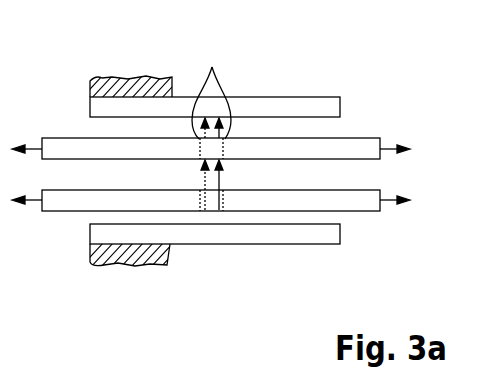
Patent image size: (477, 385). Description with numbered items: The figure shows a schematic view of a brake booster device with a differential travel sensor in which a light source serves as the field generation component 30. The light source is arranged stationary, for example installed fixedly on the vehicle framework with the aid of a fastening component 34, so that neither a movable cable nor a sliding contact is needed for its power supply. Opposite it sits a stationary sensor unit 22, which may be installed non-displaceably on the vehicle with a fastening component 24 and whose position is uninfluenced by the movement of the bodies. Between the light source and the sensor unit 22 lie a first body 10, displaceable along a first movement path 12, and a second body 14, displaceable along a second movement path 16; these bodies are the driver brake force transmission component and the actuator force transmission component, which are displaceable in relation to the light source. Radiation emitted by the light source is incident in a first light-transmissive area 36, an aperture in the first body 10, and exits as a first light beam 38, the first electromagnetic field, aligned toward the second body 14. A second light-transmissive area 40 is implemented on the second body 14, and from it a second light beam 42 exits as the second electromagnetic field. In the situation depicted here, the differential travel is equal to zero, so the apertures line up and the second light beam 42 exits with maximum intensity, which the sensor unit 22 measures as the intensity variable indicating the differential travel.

The first body 10 is at (367, 208).
The first movement path 12 is at (35, 204).
The second body 14 is at (365, 145).
The second movement path 16 is at (42, 138).
The sensor unit 22 is at (317, 105).
The fastening component 24 is at (137, 87).
The field generation component 30 is at (313, 239).
The fastening component 34 is at (170, 258).
The first light-transmissive area 36 is at (223, 209).
The first light beam 38 is at (219, 177).
The second light-transmissive area 40 is at (221, 152).
The second light beam 42 is at (212, 68).